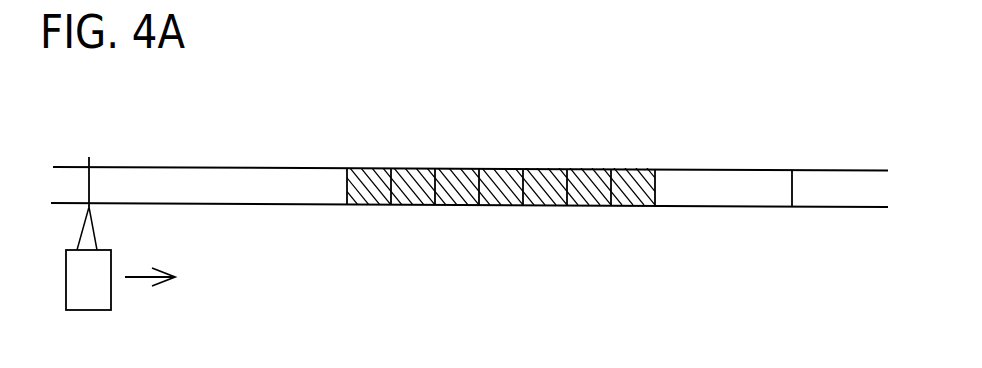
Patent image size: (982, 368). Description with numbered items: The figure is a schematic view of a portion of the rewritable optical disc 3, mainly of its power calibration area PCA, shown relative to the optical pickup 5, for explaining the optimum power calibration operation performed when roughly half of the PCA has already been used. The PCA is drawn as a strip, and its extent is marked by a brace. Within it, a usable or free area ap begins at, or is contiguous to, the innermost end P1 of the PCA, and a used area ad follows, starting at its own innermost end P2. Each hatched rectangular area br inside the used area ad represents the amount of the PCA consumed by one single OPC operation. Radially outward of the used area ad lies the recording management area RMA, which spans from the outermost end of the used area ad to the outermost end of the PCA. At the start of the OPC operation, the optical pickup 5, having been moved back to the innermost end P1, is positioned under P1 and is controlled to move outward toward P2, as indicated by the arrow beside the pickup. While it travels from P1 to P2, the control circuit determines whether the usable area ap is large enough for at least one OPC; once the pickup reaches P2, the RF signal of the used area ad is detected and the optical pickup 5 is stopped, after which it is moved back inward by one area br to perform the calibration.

The rewritable optical disc 3 is at (434, 116).
The optical pickup 5 is at (91, 302).
The innermost end of the PCA P1 is at (89, 156).
The innermost end of the used area P2 is at (346, 158).
The usable area ap is at (342, 161).
The used area ad is at (652, 161).
The recording management area RMA is at (788, 162).
The power calibration area PCA is at (793, 223).
The area used for one-time OPC br is at (583, 198).